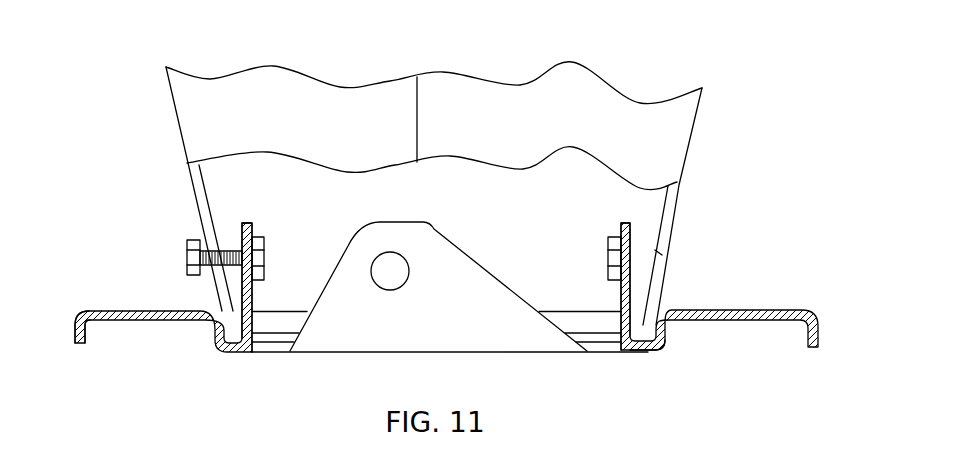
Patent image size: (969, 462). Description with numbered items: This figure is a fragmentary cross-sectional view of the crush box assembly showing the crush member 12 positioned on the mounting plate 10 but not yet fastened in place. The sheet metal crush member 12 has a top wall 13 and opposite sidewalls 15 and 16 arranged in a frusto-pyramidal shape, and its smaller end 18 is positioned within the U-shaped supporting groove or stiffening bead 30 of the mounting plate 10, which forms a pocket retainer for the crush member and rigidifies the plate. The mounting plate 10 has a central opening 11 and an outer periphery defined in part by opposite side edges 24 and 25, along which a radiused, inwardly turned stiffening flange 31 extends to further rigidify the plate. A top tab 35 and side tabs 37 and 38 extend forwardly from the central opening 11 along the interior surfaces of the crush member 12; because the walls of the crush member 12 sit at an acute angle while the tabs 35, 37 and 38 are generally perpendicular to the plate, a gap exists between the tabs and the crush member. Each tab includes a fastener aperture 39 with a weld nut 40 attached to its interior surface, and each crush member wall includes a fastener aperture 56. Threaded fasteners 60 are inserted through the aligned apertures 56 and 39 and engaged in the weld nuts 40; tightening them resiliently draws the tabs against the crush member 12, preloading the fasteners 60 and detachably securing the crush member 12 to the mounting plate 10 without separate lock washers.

The mounting plate 10 is at (458, 294).
The central opening 11 is at (418, 335).
The crush member 12 is at (438, 172).
The top wall 13 is at (257, 88).
The sidewall 15 is at (173, 103).
The sidewall 16 is at (692, 137).
The smaller end 18 is at (660, 288).
The side edge 24 is at (167, 293).
The side edge 25 is at (729, 294).
The stiffening bead 30 is at (636, 353).
The stiffening flange 31 is at (78, 347).
The top tab 35 is at (438, 278).
The side tab 37 is at (250, 223).
The side tab 38 is at (625, 223).
The fastener aperture 39 is at (382, 258).
The weld nut 40 is at (265, 255).
The fastener aperture 56 is at (210, 247).
The threaded fastener 60 is at (186, 258).